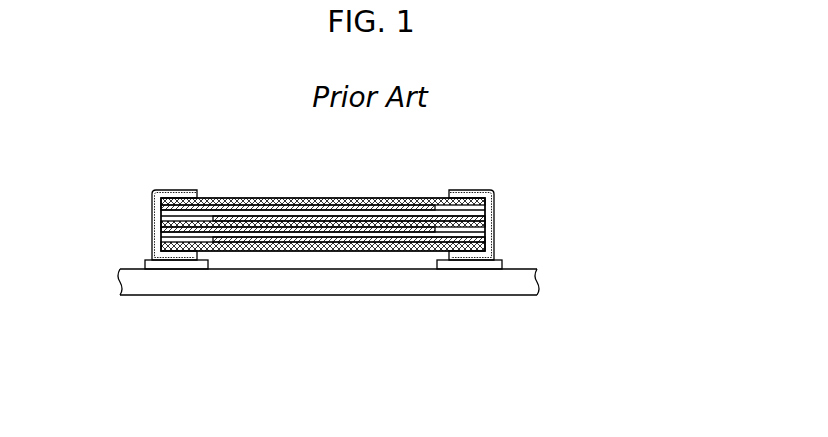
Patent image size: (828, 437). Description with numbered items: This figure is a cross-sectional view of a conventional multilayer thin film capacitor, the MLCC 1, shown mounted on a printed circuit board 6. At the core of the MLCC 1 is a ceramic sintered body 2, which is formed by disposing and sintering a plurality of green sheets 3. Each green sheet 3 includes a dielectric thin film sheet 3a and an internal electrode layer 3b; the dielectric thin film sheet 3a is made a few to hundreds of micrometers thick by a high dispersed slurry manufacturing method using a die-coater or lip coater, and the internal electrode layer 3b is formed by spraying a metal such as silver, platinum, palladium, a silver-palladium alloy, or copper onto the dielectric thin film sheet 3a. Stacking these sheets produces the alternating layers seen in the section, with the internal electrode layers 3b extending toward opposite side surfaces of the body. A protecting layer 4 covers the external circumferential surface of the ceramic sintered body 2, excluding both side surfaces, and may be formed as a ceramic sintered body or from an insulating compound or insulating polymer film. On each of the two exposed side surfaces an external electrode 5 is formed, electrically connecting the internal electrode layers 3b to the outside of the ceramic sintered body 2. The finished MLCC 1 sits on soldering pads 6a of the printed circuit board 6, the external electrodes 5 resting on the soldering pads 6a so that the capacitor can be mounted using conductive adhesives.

The MLCC 1 is at (171, 179).
The ceramic sintered body 2 is at (612, 187).
The green sheet 3 is at (580, 162).
The dielectric thin film sheet 3a is at (478, 210).
The internal electrode layer 3b is at (471, 197).
The protecting layer 4 is at (203, 197).
The external electrode 5 is at (160, 222).
The printed circuit board 6 is at (322, 286).
The soldering pad 6a is at (173, 269).